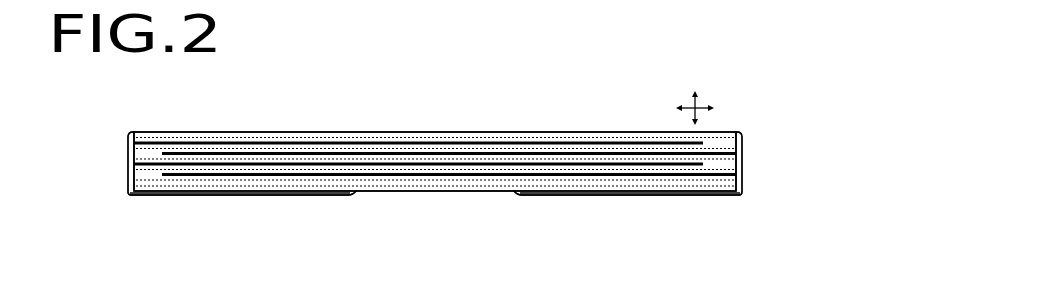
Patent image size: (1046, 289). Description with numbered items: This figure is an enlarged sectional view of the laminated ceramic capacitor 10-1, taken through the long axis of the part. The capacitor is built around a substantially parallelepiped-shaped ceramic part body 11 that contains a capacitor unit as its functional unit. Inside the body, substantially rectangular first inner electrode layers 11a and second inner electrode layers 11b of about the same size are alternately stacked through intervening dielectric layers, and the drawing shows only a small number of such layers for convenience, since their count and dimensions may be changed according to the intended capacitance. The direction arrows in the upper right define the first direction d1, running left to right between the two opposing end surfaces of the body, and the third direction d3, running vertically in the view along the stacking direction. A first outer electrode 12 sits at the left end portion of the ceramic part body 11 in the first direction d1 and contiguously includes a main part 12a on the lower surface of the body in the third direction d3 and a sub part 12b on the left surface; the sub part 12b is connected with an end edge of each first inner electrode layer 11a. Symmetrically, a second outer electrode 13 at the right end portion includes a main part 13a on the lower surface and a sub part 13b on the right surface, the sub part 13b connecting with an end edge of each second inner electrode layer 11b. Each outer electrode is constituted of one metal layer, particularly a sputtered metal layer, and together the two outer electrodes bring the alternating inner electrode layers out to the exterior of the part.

The laminated ceramic capacitor 10-1 is at (183, 129).
The ceramic part body 11 is at (431, 132).
The first inner electrode layer 11a is at (522, 142).
The second inner electrode layer 11b is at (585, 152).
The first outer electrode 12 is at (127, 191).
The main part 12a is at (234, 196).
The sub part 12b is at (128, 160).
The second outer electrode 13 is at (742, 191).
The main part 13a is at (633, 196).
The sub part 13b is at (742, 160).
The third direction d3 is at (695, 97).
The first direction d1 is at (706, 108).